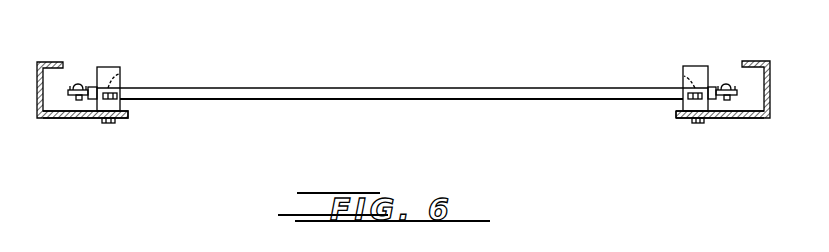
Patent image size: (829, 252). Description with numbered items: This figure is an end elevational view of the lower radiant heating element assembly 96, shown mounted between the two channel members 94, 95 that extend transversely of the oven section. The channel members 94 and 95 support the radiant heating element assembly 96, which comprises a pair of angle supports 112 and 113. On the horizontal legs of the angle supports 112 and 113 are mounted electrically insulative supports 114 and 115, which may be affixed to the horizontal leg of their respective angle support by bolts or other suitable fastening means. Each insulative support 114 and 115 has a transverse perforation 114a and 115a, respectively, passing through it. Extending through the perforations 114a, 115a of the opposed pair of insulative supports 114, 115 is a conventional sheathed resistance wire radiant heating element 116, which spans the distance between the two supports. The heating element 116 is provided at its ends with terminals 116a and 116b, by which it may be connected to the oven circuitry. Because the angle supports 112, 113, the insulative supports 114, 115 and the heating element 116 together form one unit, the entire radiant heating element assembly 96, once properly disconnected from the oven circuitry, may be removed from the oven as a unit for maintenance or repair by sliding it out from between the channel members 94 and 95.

The channel member 94 is at (40, 118).
The channel member 95 is at (756, 118).
The lower radiant heating element assembly 96 is at (243, 100).
The angle support 112 is at (85, 118).
The angle support 113 is at (715, 112).
The electrically insulative support 114 is at (110, 68).
The transverse perforation 114a is at (115, 78).
The electrically insulative support 115 is at (690, 66).
The transverse perforation 115a is at (690, 80).
The sheathed resistance wire radiant heating element 116 is at (388, 93).
The terminal 116a is at (80, 86).
The terminal 116b is at (722, 85).